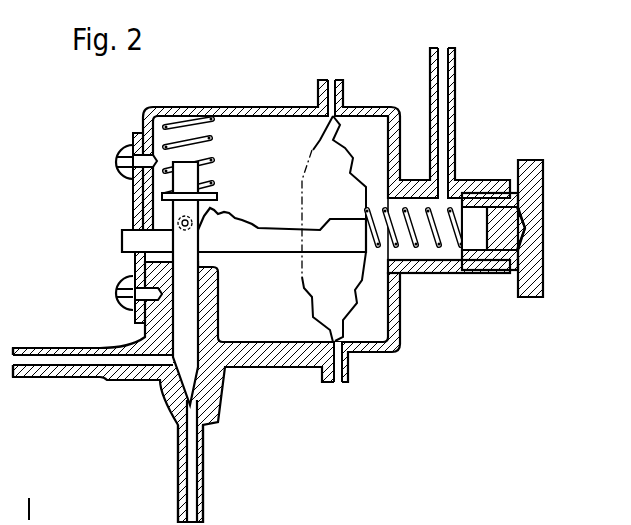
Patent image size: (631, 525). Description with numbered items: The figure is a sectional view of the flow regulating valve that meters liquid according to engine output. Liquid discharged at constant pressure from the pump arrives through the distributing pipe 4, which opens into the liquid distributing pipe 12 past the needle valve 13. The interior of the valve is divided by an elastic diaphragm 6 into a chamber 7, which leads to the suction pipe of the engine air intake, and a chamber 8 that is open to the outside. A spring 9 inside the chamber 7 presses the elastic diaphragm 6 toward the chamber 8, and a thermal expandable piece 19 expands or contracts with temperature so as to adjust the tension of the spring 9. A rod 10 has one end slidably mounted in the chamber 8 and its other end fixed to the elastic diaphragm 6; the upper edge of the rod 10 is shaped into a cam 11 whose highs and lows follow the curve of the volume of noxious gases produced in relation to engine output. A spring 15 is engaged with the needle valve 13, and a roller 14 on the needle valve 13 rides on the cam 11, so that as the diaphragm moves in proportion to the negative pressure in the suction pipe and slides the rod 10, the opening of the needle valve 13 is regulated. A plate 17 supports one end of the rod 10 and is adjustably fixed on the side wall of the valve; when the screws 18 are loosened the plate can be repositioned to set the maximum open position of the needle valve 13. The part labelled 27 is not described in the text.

The distributing pipe 4 is at (48, 360).
The elastic diaphragm 6 is at (362, 302).
The chamber 7 is at (362, 130).
The chamber 8 is at (270, 132).
The spring 9 is at (438, 243).
The rod 10 is at (263, 233).
The cam 11 is at (232, 213).
The liquid distributing pipe 12 is at (207, 475).
The needle valve 13 is at (185, 358).
The roller 14 is at (176, 221).
The spring 15 is at (175, 118).
The plate 17 is at (135, 264).
The screws 18 is at (117, 153).
The thermal expandable piece 19 is at (505, 227).
The cap 27 is at (538, 298).